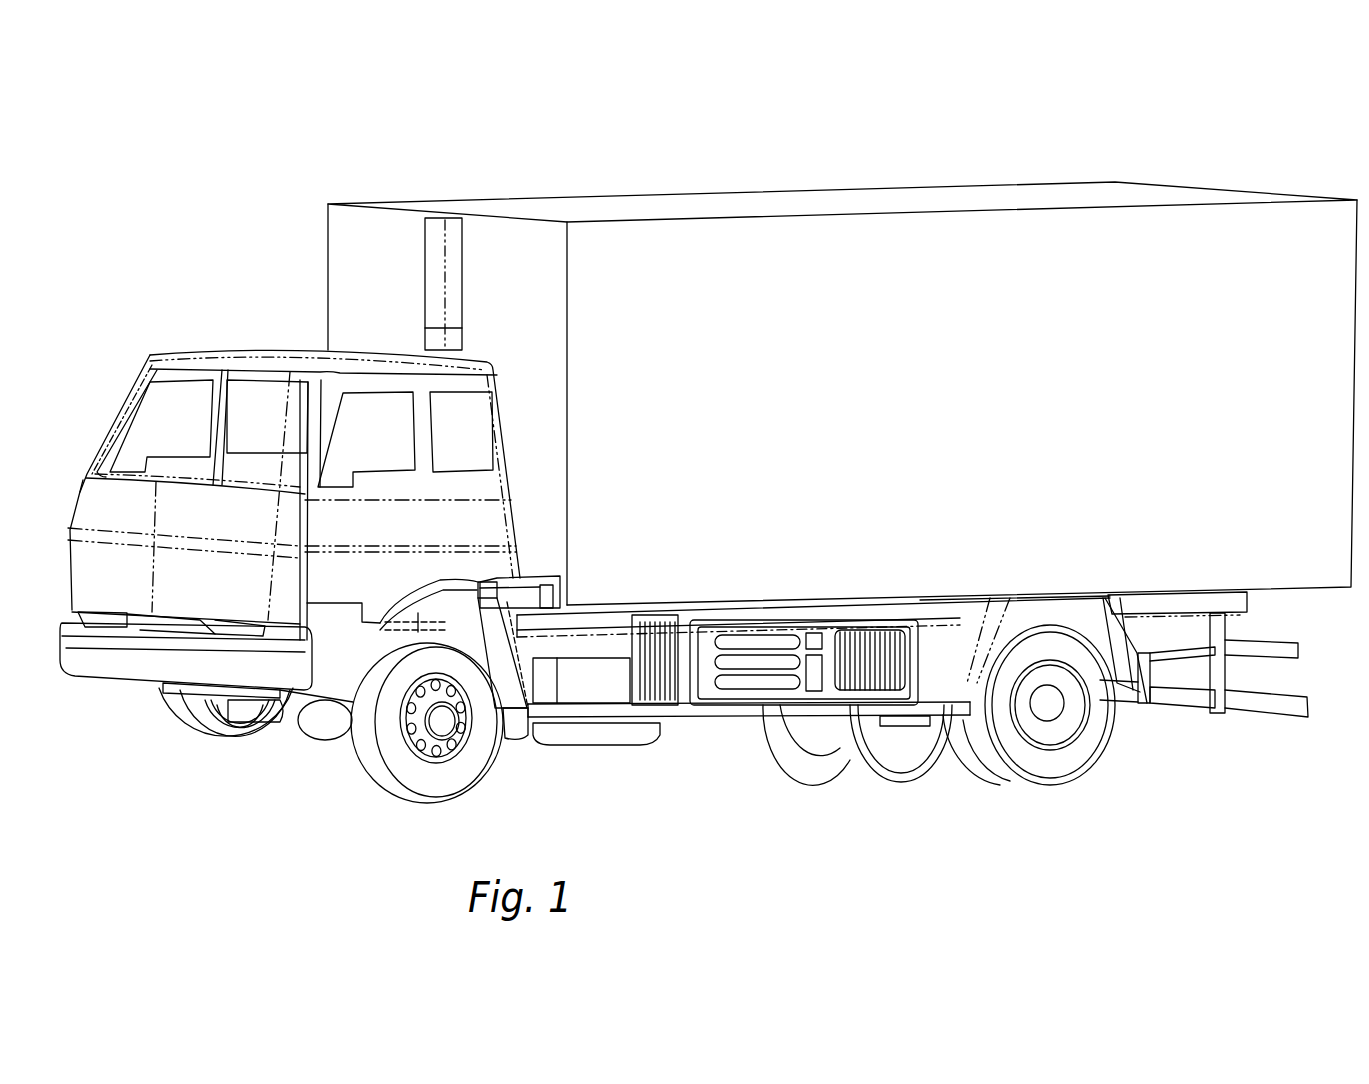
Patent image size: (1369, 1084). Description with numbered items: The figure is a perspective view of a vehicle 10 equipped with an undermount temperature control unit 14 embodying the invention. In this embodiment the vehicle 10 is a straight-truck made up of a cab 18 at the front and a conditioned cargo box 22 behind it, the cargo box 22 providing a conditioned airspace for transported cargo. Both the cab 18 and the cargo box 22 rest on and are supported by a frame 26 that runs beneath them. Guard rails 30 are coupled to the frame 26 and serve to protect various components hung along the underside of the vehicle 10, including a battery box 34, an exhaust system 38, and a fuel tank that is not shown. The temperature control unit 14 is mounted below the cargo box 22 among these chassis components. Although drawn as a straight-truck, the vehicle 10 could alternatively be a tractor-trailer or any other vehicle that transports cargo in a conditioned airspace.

The vehicle 10 is at (203, 155).
The conditioned cargo box 22 is at (861, 202).
The cab 18 is at (213, 355).
The frame 26 is at (1158, 605).
The undermount temperature control unit 14 is at (825, 687).
The guard rails 30 is at (672, 712).
The battery box 34 is at (578, 687).
The exhaust system 38 is at (585, 735).